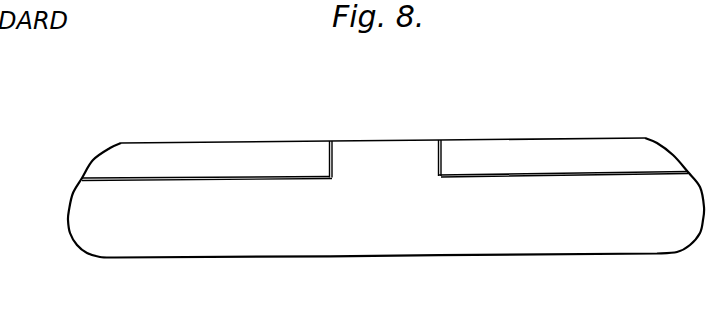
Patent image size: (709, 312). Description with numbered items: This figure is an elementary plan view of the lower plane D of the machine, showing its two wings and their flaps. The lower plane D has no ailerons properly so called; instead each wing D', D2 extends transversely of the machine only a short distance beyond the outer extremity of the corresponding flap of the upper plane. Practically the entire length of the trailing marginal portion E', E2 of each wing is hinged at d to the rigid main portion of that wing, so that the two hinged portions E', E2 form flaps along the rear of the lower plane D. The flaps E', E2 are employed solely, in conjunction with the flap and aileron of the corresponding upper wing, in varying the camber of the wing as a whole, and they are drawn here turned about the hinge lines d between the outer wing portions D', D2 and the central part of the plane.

The trailing marginal portion (flap) of lower wing E' is at (226, 143).
The trailing marginal portion (flap) of lower wing E2 is at (531, 148).
The hinge d is at (208, 178).
The wing of lower plane D' is at (199, 200).
The lower plane D is at (384, 198).
The wing of lower plane D2 is at (571, 196).